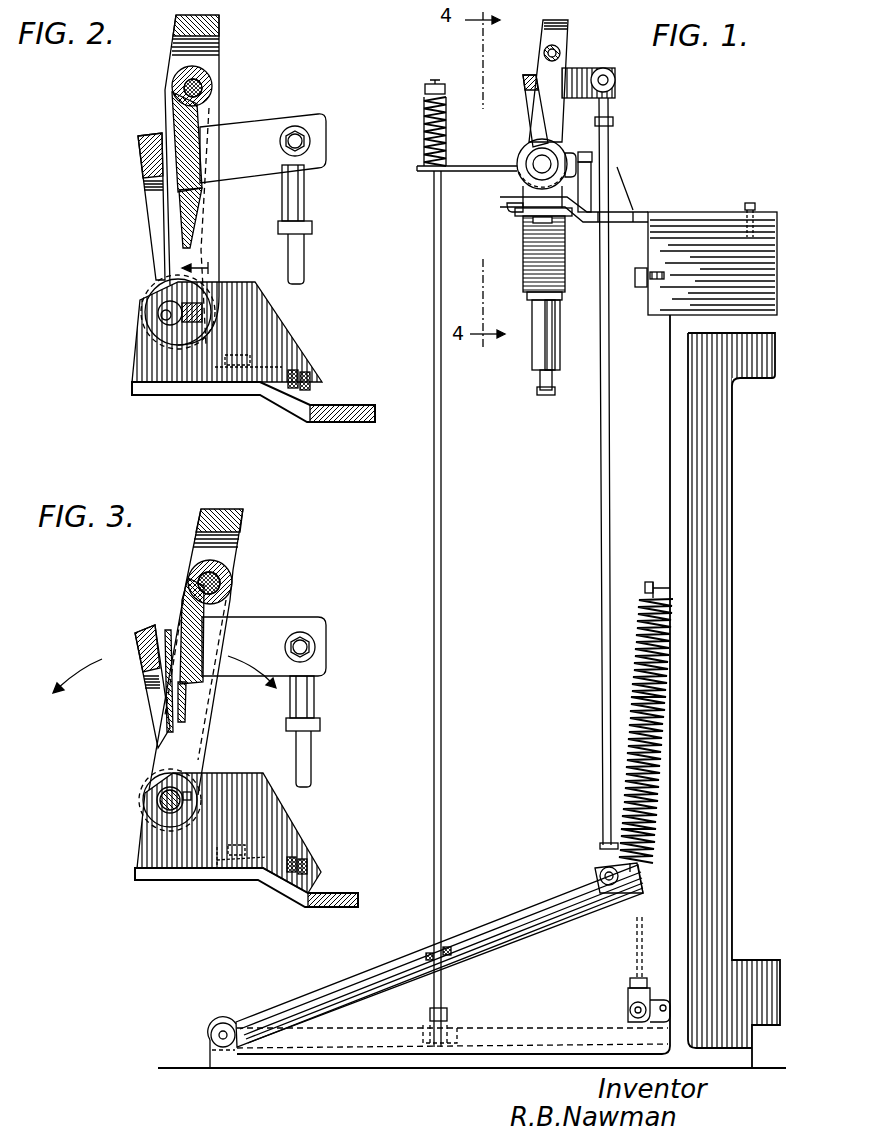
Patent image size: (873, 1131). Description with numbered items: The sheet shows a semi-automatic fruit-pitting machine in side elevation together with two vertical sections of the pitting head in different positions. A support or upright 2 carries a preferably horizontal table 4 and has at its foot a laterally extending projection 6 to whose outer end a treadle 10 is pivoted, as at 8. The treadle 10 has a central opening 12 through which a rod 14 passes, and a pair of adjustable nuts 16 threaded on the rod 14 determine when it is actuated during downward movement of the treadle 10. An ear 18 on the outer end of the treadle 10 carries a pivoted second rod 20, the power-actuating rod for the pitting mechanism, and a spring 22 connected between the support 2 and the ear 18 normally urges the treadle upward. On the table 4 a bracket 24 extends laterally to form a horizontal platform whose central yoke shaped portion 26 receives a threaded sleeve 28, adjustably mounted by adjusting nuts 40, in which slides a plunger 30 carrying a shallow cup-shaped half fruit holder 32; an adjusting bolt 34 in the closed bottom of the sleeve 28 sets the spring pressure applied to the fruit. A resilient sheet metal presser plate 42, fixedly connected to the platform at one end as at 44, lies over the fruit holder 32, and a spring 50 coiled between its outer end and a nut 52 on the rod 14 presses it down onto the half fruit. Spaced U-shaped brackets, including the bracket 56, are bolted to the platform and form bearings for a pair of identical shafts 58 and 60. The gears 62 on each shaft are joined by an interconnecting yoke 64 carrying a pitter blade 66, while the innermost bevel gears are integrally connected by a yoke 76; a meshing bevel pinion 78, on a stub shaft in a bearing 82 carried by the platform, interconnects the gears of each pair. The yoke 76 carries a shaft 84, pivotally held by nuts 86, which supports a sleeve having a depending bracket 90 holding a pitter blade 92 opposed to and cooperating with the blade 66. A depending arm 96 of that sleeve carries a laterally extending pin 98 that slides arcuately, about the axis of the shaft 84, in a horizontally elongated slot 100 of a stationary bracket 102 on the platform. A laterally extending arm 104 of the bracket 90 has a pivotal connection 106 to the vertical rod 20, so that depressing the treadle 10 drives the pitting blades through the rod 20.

In FIG. 1, the support or upright 2 is at (688, 481).
In FIG. 1, the table 4 is at (672, 298).
In FIG. 1, the laterally extending projection 6 is at (525, 1060).
In FIG. 1, the pivot 8 is at (212, 1035).
In FIG. 1, the treadle 10 is at (365, 977).
In FIG. 1, the central opening 12 is at (449, 954).
In FIG. 1, the rod 14 is at (445, 831).
In FIG. 1, the adjustable nuts 16 is at (452, 1013).
In FIG. 1, the ear 18 is at (600, 872).
In FIG. 1, the second rod 20 is at (603, 754).
In FIG. 2, the second rod 20 is at (300, 248).
In FIG. 3, the second rod 20 is at (311, 768).
In FIG. 1, the spring 22 is at (632, 688).
In FIG. 1, the bracket 24 is at (533, 211).
In FIG. 2, the bracket 24 is at (335, 417).
In FIG. 3, the bracket 24 is at (190, 877).
In FIG. 1, the central yoke shaped portion 26 is at (533, 239).
In FIG. 1, the threaded sleeve 28 is at (540, 355).
In FIG. 1, the plunger 30 is at (636, 947).
In FIG. 1, the half fruit holder 32 is at (515, 206).
In FIG. 1, the adjusting bolt 34 is at (540, 393).
In FIG. 1, the adjusting nuts 40 is at (568, 297).
In FIG. 1, the resilient sheet metal presser plate 42 is at (625, 208).
In FIG. 1, the fixed connection 44 is at (700, 212).
In FIG. 1, the spring 50 is at (425, 140).
In FIG. 1, the nut 52 is at (434, 84).
In FIG. 1, the bracket 56 is at (548, 195).
In FIG. 2, the shaft 58 is at (165, 305).
In FIG. 3, the shaft 58 is at (158, 802).
In FIG. 1, the shaft 60 is at (532, 163).
In FIG. 1, the gears 62 is at (577, 158).
In FIG. 1, the interconnecting yoke 64 is at (531, 78).
In FIG. 2, the interconnecting yoke 64 is at (137, 155).
In FIG. 3, the interconnecting yoke 64 is at (130, 641).
In FIG. 2, the pitter blade 66 is at (166, 205).
In FIG. 3, the pitter blade 66 is at (162, 705).
In FIG. 1, the yoke 76 is at (571, 30).
In FIG. 2, the yoke 76 is at (221, 22).
In FIG. 3, the yoke 76 is at (244, 512).
In FIG. 1, the meshing bevel pinion 78 is at (593, 165).
In FIG. 1, the bearing 82 is at (592, 188).
In FIG. 2, the shaft 84 is at (210, 80).
In FIG. 3, the shaft 84 is at (215, 573).
In FIG. 1, the nuts 86 is at (562, 53).
In FIG. 2, the depending bracket 90 is at (200, 161).
In FIG. 3, the depending bracket 90 is at (215, 636).
In FIG. 2, the pitter blade 92 is at (190, 203).
In FIG. 3, the pitter blade 92 is at (198, 707).
In FIG. 2, the depending arm 96 is at (222, 264).
In FIG. 3, the depending arm 96 is at (170, 757).
In FIG. 2, the laterally extending pin 98 is at (190, 313).
In FIG. 3, the laterally extending pin 98 is at (172, 812).
In FIG. 2, the slot 100 is at (165, 317).
In FIG. 3, the slot 100 is at (190, 792).
In FIG. 2, the stationary bracket 102 is at (138, 357).
In FIG. 3, the stationary bracket 102 is at (157, 852).
In FIG. 1, the laterally extending arm 104 is at (612, 103).
In FIG. 2, the laterally extending arm 104 is at (268, 123).
In FIG. 3, the laterally extending arm 104 is at (268, 625).
In FIG. 1, the pivotal connection 106 is at (616, 80).
In FIG. 2, the pivotal connection 106 is at (306, 128).
In FIG. 3, the pivotal connection 106 is at (320, 641).